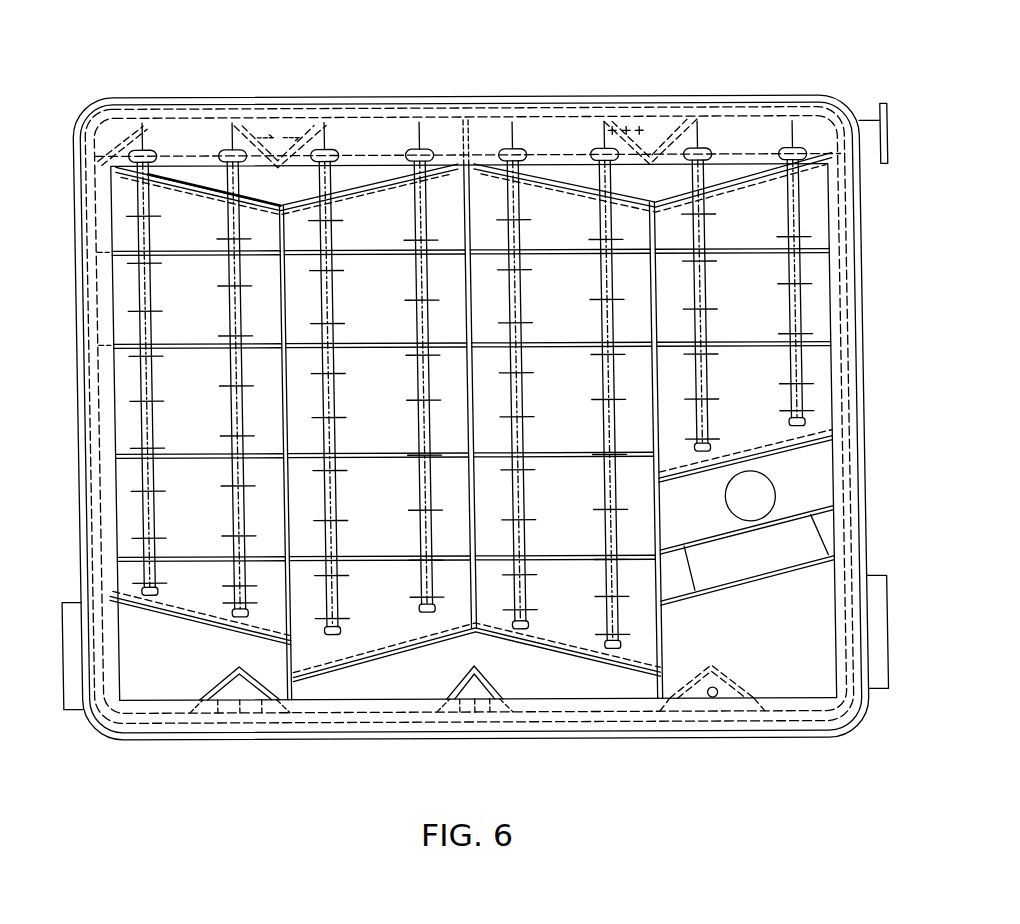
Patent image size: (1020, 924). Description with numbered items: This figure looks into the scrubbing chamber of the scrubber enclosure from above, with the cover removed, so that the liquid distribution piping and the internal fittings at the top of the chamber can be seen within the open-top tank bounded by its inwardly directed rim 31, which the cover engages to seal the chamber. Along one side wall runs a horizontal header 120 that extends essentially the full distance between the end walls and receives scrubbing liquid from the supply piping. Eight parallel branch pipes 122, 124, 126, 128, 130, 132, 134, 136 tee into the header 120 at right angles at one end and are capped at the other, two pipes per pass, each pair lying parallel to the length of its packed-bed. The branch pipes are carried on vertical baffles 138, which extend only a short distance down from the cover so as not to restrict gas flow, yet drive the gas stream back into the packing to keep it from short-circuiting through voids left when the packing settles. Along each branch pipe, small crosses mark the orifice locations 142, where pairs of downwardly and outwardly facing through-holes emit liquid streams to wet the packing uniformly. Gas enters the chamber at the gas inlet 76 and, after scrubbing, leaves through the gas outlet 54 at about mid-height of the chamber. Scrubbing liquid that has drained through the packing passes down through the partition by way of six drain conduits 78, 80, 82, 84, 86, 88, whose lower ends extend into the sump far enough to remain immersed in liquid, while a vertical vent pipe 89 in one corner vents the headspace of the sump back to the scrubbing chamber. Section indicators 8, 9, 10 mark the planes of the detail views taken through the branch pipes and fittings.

The rim 31 is at (388, 139).
The gas outlet 54 is at (870, 690).
The gas inlet 76 is at (73, 709).
The drain conduit 78 is at (232, 689).
The drain conduit 80 is at (284, 122).
The drain conduit 82 is at (472, 688).
The drain conduit 84 is at (665, 120).
The drain conduit 86 is at (762, 490).
The drain conduit 88 is at (722, 698).
The vent pipe 89 is at (123, 98).
The header 120 is at (567, 130).
The branch pipe 122 is at (140, 232).
The branch pipe 124 is at (222, 207).
The branch pipe 126 is at (345, 178).
The branch pipe 128 is at (448, 168).
The branch pipe 130 is at (532, 193).
The branch pipe 132 is at (597, 178).
The branch pipe 134 is at (711, 178).
The branch pipe 136 is at (804, 178).
The baffle 138 is at (200, 257).
The orifice locations 142 is at (232, 238).
The section line 8- 8 is at (305, 268).
The section line 9- 9 is at (198, 638).
The section line 10- 10 is at (771, 597).